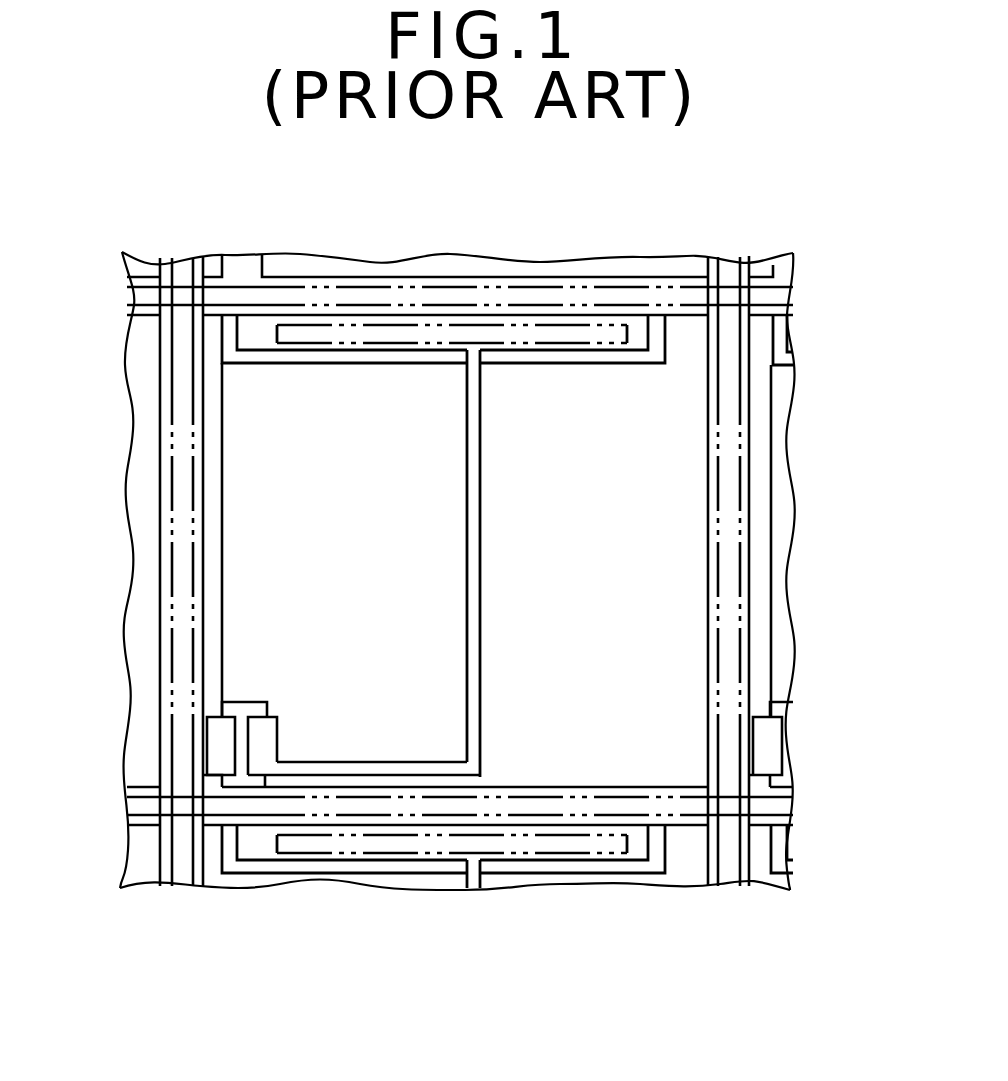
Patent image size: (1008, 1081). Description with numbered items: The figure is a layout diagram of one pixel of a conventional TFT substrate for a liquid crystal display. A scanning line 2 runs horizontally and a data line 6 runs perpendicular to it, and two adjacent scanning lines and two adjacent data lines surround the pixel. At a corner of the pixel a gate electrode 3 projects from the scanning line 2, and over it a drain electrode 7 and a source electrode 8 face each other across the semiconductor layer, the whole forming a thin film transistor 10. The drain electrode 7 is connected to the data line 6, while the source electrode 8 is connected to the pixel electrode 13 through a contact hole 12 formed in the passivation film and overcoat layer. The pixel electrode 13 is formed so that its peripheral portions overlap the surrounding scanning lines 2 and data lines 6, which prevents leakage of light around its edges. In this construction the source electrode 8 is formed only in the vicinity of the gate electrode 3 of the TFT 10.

The scanning line 2 is at (621, 305).
The gate electrode 3 is at (248, 703).
The data line 6 is at (184, 862).
The drain electrode 7 is at (227, 745).
The source electrode 8 is at (262, 757).
The thin film transistor 10 is at (303, 684).
The contact hole 12 is at (398, 333).
The pixel electrode 13 is at (680, 470).